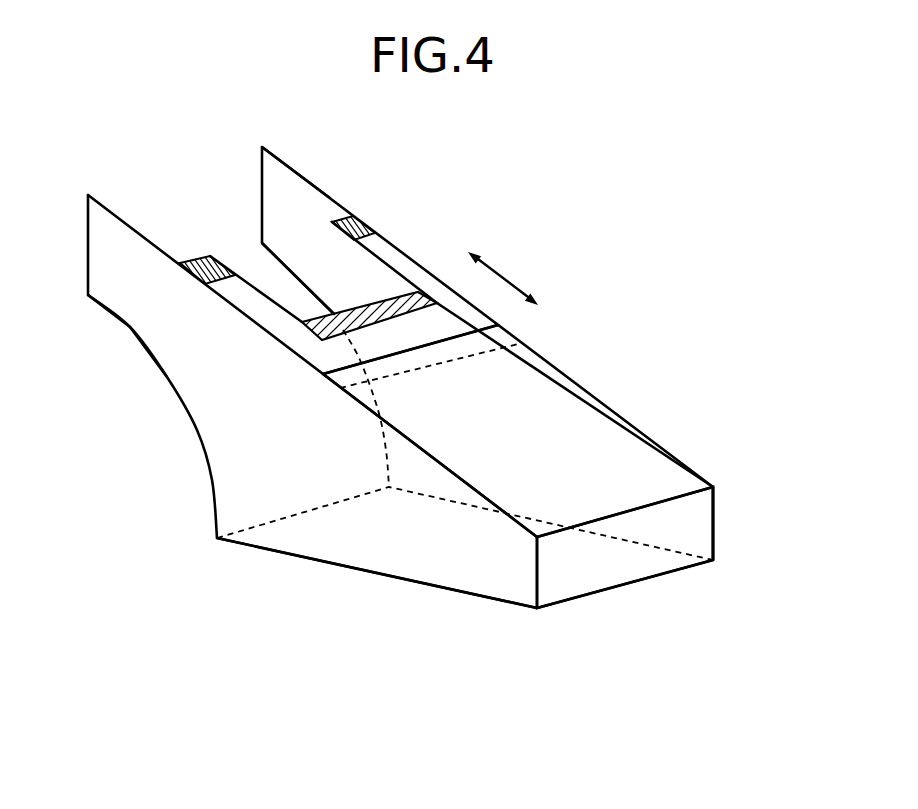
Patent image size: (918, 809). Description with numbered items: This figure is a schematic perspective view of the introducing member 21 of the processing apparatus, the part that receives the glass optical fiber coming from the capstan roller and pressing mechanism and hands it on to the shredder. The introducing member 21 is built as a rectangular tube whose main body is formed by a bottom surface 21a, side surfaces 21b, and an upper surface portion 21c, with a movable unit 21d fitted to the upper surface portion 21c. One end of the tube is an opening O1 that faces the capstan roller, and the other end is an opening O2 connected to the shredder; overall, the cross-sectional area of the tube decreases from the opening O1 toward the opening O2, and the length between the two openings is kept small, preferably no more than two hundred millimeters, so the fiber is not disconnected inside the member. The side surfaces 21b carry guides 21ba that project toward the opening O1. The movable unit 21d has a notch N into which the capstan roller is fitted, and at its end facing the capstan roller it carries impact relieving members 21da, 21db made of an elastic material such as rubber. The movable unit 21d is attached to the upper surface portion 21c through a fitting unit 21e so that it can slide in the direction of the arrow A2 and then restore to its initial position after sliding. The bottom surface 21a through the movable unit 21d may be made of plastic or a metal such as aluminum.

The introducing member 21 is at (432, 400).
The bottom surface 21a is at (467, 555).
The side surfaces 21b is at (217, 478).
The guides 21ba is at (137, 322).
The upper surface portion 21c is at (677, 478).
The movable unit 21d is at (447, 318).
The impact relieving member 21da is at (387, 307).
The impact relieving member 21db is at (207, 255).
The fitting unit 21e is at (518, 330).
The notch N is at (245, 256).
The opening O1 is at (142, 407).
The opening O2 is at (723, 518).
The arrow A2 is at (505, 277).